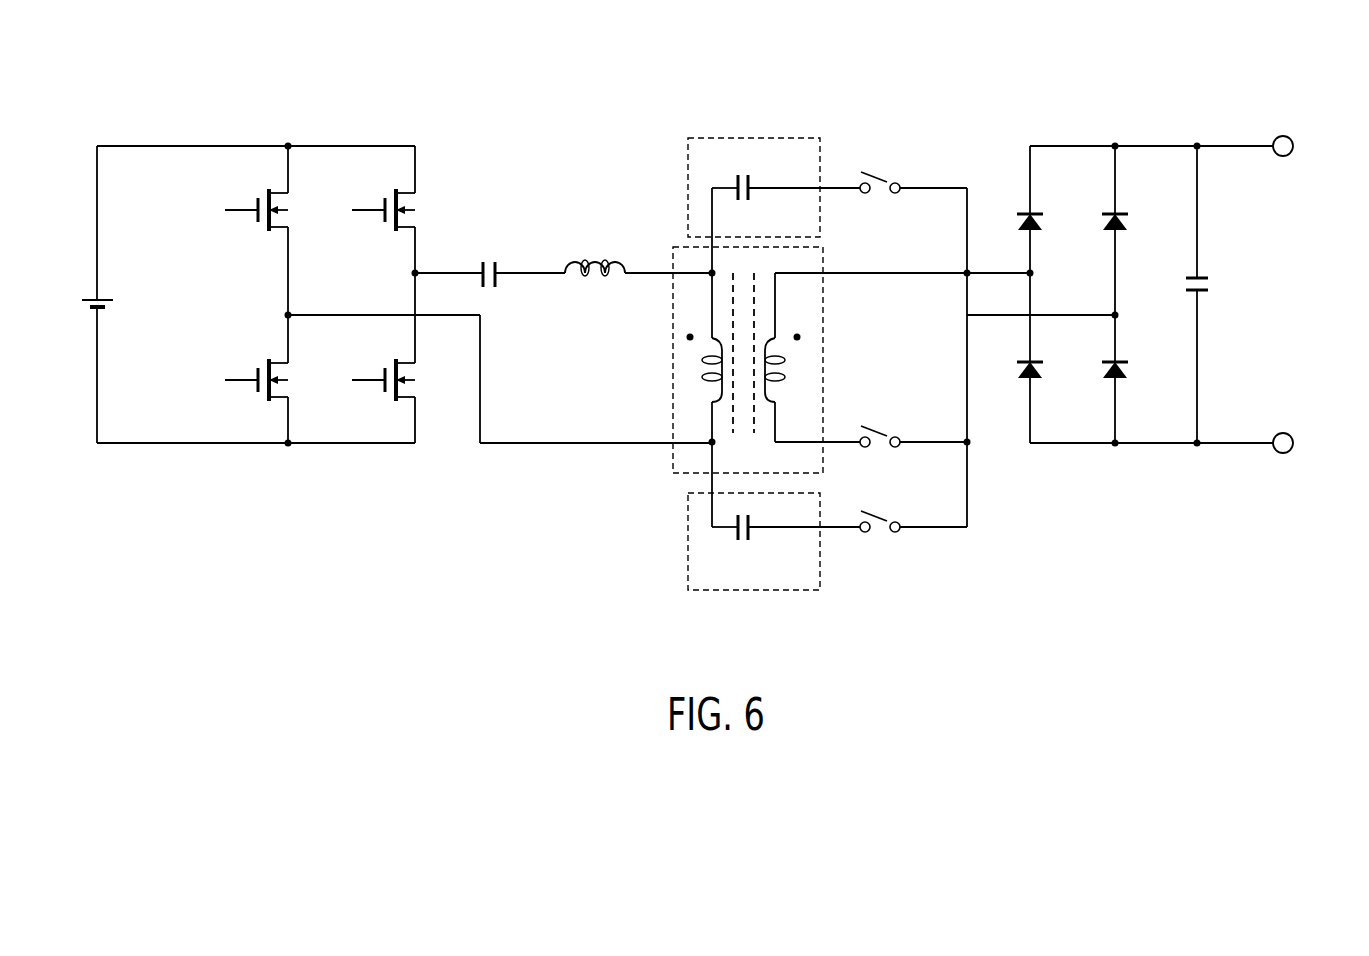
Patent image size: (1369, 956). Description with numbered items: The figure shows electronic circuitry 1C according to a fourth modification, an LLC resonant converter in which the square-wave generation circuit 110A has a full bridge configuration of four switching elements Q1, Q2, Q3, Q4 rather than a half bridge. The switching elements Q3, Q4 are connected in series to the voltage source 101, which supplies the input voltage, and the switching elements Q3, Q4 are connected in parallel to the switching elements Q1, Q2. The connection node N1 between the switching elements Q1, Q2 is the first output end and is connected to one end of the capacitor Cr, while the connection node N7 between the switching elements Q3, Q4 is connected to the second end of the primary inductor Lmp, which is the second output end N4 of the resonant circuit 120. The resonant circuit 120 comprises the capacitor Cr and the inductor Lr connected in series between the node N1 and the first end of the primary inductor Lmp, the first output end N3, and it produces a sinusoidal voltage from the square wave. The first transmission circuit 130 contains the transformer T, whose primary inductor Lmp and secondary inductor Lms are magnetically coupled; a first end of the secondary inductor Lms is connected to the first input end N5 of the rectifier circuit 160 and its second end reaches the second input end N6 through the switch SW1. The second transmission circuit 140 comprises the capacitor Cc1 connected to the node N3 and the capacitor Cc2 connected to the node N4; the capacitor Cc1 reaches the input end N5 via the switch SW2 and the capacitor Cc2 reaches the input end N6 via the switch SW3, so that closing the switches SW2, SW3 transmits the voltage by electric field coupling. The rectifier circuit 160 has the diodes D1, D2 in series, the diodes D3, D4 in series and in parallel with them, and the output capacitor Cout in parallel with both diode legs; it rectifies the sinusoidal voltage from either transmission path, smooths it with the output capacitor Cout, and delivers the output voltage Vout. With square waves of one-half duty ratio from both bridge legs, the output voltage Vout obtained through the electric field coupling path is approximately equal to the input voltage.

The electronic circuitry 1C is at (246, 34).
The voltage source 101 is at (95, 294).
The square-wave generation circuit 110A is at (404, 256).
The resonant circuit 120 is at (563, 183).
The first transmission circuit 130 is at (725, 357).
The second transmission circuit 140 is at (792, 364).
The rectifier circuit 160 is at (1060, 257).
The switching element Q1 is at (401, 209).
The switching element Q2 is at (401, 358).
The switching element Q3 is at (274, 230).
The switching element Q4 is at (274, 379).
The connection node N1 is at (400, 274).
The first output end N3 is at (701, 261).
The second output end N4 is at (697, 456).
The first input end N5 is at (1047, 276).
The second input end N6 is at (1059, 316).
The connection node N7 is at (366, 316).
The capacitor Cr is at (490, 281).
The inductor Lr is at (638, 280).
The primary inductor Lmp is at (699, 357).
The secondary inductor Lms is at (791, 357).
The transformer T is at (799, 313).
The capacitor Cc1 is at (786, 196).
The capacitor Cc2 is at (786, 535).
The switch SW1 is at (871, 450).
The switch SW2 is at (913, 198).
The switch SW3 is at (913, 536).
The diode D1 is at (1040, 209).
The diode D2 is at (1040, 358).
The diode D3 is at (1125, 294).
The diode D4 is at (1125, 386).
The output capacitor Cout is at (1227, 294).
The output voltage Vout is at (1309, 146).